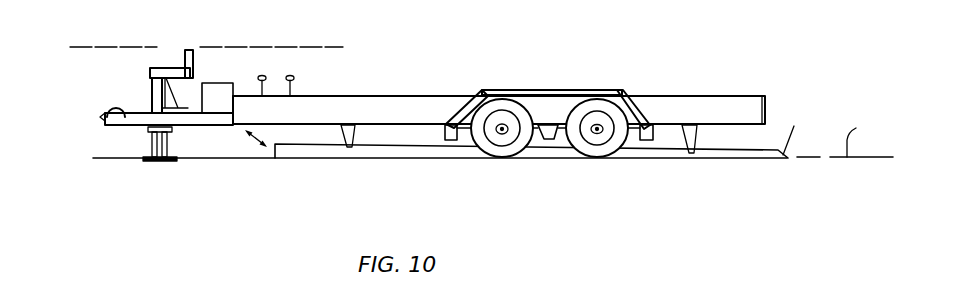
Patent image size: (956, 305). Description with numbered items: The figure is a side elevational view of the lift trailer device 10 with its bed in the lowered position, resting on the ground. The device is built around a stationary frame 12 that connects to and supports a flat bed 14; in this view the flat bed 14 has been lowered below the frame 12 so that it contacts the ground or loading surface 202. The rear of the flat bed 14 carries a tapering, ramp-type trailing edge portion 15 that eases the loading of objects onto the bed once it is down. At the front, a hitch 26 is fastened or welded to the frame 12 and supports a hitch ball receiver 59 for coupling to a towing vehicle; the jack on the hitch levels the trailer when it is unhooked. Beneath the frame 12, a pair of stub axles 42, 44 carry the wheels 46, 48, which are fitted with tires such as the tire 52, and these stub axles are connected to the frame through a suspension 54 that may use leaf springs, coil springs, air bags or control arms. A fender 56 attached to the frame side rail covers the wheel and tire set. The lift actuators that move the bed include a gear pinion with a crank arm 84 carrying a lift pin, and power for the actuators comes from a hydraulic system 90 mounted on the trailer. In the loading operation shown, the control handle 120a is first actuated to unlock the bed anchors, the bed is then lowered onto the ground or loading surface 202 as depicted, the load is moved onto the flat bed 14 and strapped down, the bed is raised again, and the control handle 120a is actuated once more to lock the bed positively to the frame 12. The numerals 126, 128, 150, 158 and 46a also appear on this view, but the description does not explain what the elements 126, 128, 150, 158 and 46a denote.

The lift trailer device 10 is at (164, 32).
The frame 12 is at (310, 129).
The flat bed 14 is at (714, 164).
The trailing edge portion 15 is at (798, 131).
The hitch 26 is at (204, 130).
The stub axle 42 is at (531, 150).
The stub axle 44 is at (578, 148).
The wheel 46 is at (497, 130).
The wheel 48 is at (597, 134).
The tire 52 is at (612, 144).
The suspension 54 is at (545, 147).
The fender 56 is at (512, 90).
The hitch ball receiver 59 is at (115, 108).
The crank arm 84 is at (351, 145).
The hydraulic system 90 is at (215, 90).
The deck section 126 is at (360, 108).
The upright post 128 is at (143, 92).
The front wheel rim 150 is at (511, 146).
The handle 158 is at (155, 77).
The control handle 120a is at (262, 75).
The sensor 46a is at (290, 74).
The ground or loading surface 202 is at (862, 132).